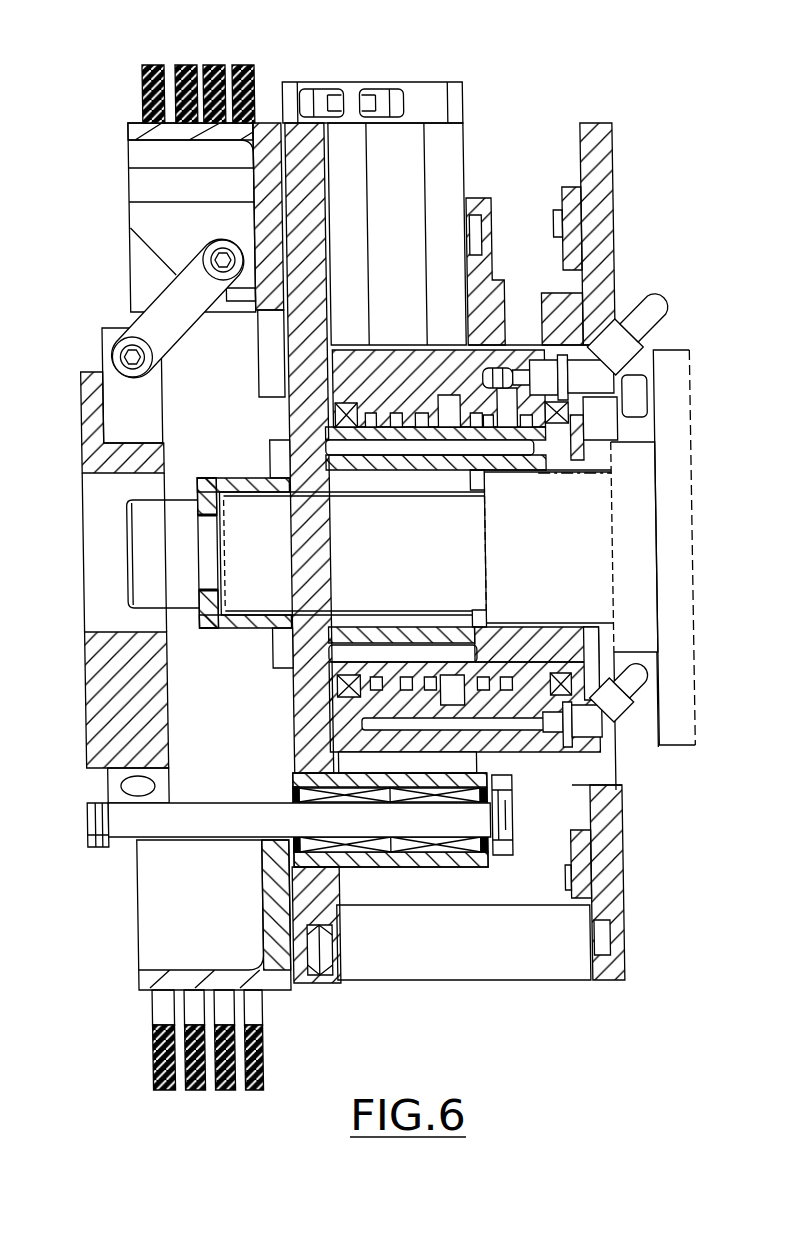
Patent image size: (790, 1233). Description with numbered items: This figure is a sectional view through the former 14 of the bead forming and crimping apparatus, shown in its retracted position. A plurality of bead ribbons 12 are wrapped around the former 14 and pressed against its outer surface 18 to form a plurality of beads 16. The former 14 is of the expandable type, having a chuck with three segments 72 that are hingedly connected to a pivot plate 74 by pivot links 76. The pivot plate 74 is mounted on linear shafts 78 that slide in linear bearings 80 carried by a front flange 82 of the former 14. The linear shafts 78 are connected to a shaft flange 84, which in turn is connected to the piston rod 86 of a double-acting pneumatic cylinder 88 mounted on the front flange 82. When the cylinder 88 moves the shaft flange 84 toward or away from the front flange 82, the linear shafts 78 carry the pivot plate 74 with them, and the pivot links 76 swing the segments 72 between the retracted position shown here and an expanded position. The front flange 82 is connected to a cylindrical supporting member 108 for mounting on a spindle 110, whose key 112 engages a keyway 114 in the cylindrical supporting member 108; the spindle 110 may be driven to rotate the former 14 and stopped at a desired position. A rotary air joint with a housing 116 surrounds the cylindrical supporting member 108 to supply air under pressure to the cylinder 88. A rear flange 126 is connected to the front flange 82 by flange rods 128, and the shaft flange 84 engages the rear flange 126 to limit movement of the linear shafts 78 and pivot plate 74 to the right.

The bead ribbons 12 is at (247, 1033).
The former 14 is at (551, 60).
The beads 16 is at (241, 65).
The outer surface 18 is at (133, 123).
The segments 72 is at (130, 152).
The pivot plate 74 is at (80, 393).
The pivot links 76 is at (135, 320).
The linear shafts 78 is at (124, 840).
The linear bearings 80 is at (392, 860).
The front flange 82 is at (297, 990).
The shaft flange 84 is at (486, 852).
The piston rod 86 is at (468, 215).
The double-acting pneumatic cylinder 88 is at (452, 140).
The cylindrical supporting member 108 is at (537, 462).
The spindle 110 is at (678, 500).
The key 112 is at (400, 628).
The keyway 114 is at (340, 627).
The housing 116 is at (532, 742).
The rear flange 126 is at (605, 845).
The flange rods 128 is at (512, 980).